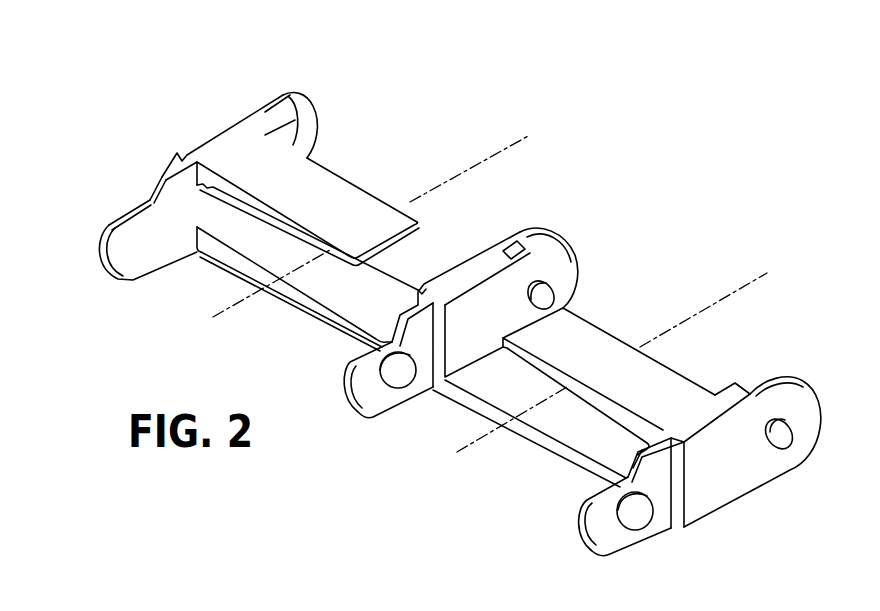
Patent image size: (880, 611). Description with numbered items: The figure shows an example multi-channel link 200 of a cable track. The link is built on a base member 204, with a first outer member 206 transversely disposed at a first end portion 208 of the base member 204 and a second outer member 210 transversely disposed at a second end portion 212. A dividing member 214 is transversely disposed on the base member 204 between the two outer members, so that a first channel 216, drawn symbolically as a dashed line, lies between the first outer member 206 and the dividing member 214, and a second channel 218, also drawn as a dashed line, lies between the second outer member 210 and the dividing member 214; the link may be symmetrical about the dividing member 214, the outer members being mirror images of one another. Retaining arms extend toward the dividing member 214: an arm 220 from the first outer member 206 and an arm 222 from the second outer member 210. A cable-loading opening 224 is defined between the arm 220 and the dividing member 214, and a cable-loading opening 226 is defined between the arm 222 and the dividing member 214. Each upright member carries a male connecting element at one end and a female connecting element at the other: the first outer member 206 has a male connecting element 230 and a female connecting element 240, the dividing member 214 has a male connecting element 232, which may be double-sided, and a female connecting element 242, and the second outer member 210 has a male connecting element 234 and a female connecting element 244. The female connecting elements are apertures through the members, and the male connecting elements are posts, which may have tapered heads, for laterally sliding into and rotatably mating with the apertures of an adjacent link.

The multi-channel link 200 is at (609, 100).
The base member 204 is at (307, 308).
The first outer member 206 is at (107, 270).
The first end portion 208 is at (195, 258).
The second outer member 210 is at (584, 540).
The second end portion 212 is at (580, 492).
The dividing member 214 is at (347, 402).
The first channel 216 is at (473, 166).
The second channel 218 is at (712, 304).
The arm 220 is at (352, 190).
The arm 222 is at (667, 378).
The cable-loading opening 224 is at (447, 248).
The cable-loading opening 226 is at (511, 303).
The male connecting element 230 is at (133, 208).
The male connecting element 232 is at (350, 362).
The male connecting element 234 is at (636, 531).
The female connecting element 240 is at (318, 114).
The female connecting element 242 is at (556, 296).
The female connecting element 244 is at (778, 445).